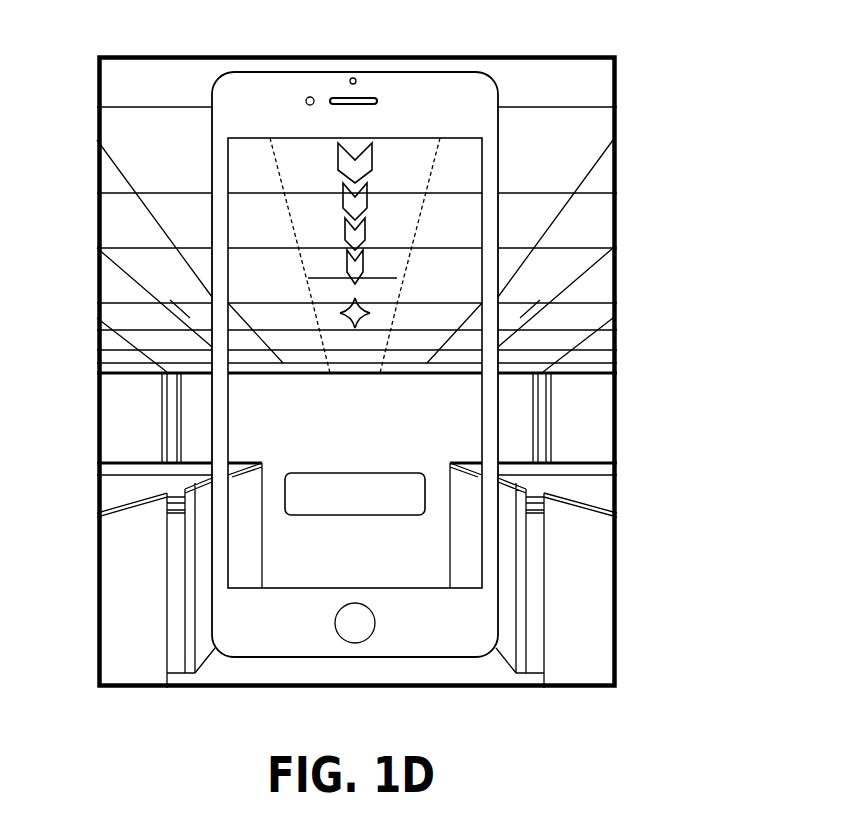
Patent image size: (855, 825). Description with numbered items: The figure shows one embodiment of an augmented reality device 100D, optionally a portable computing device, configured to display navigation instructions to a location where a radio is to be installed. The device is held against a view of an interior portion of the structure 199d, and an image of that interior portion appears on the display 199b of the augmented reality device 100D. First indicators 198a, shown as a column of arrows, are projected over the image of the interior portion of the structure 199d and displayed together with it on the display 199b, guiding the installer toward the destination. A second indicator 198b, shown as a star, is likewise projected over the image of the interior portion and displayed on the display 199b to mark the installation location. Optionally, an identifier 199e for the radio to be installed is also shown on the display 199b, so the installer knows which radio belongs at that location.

The augmented reality device 100D is at (410, 72).
The first indicators 198a is at (367, 200).
The second indicator 198b is at (362, 313).
The display 199b is at (383, 430).
The interior portion of the structure 199d is at (538, 90).
The identifier for the radio 199e is at (430, 500).